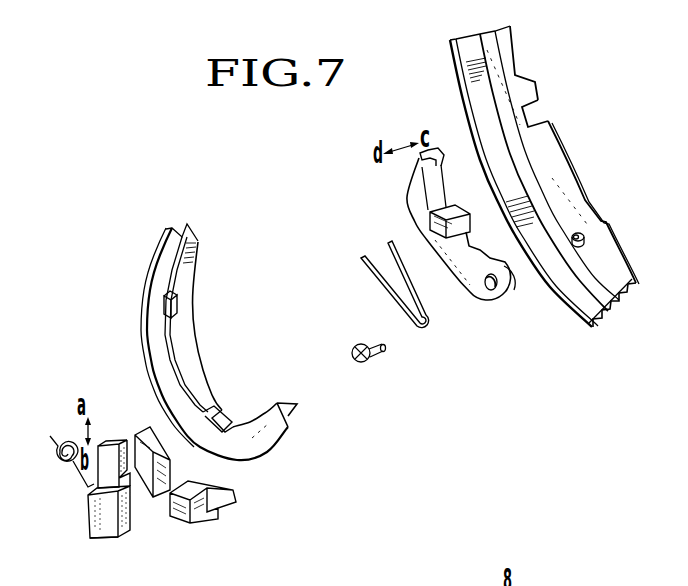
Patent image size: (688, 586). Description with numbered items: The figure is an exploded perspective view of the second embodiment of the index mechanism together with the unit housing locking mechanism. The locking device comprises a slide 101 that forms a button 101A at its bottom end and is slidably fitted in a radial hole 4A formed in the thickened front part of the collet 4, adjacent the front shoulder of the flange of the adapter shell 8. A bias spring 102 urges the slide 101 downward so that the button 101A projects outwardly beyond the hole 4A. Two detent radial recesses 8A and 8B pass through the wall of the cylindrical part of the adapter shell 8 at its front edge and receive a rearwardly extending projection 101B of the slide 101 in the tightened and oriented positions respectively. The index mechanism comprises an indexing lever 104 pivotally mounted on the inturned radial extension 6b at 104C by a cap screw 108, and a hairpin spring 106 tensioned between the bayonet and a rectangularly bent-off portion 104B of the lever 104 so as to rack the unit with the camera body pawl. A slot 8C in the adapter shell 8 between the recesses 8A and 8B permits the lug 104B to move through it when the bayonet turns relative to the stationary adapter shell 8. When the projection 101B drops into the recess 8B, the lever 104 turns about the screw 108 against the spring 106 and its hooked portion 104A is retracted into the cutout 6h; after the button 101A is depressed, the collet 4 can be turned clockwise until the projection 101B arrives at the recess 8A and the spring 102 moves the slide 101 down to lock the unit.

The collet 4 is at (227, 505).
The radial hole 4A is at (163, 500).
The inturned radial extension 6b is at (547, 147).
The cutout 6h is at (530, 111).
The adapter shell 8 is at (207, 349).
The detent radial recess 8A is at (228, 420).
The detent radial recess 8B is at (173, 306).
The slot 8C is at (165, 342).
The slide 101 is at (90, 482).
The button 101A is at (113, 537).
The projection 101B is at (127, 441).
The bias spring 102 is at (50, 437).
The indexing lever 104 is at (469, 219).
The hooked portion 104A is at (437, 152).
The rectangularly bent-off portion 104B is at (452, 212).
The pivot 104C is at (492, 290).
The hairpin spring 106 is at (422, 330).
The cap screw 108 is at (368, 366).